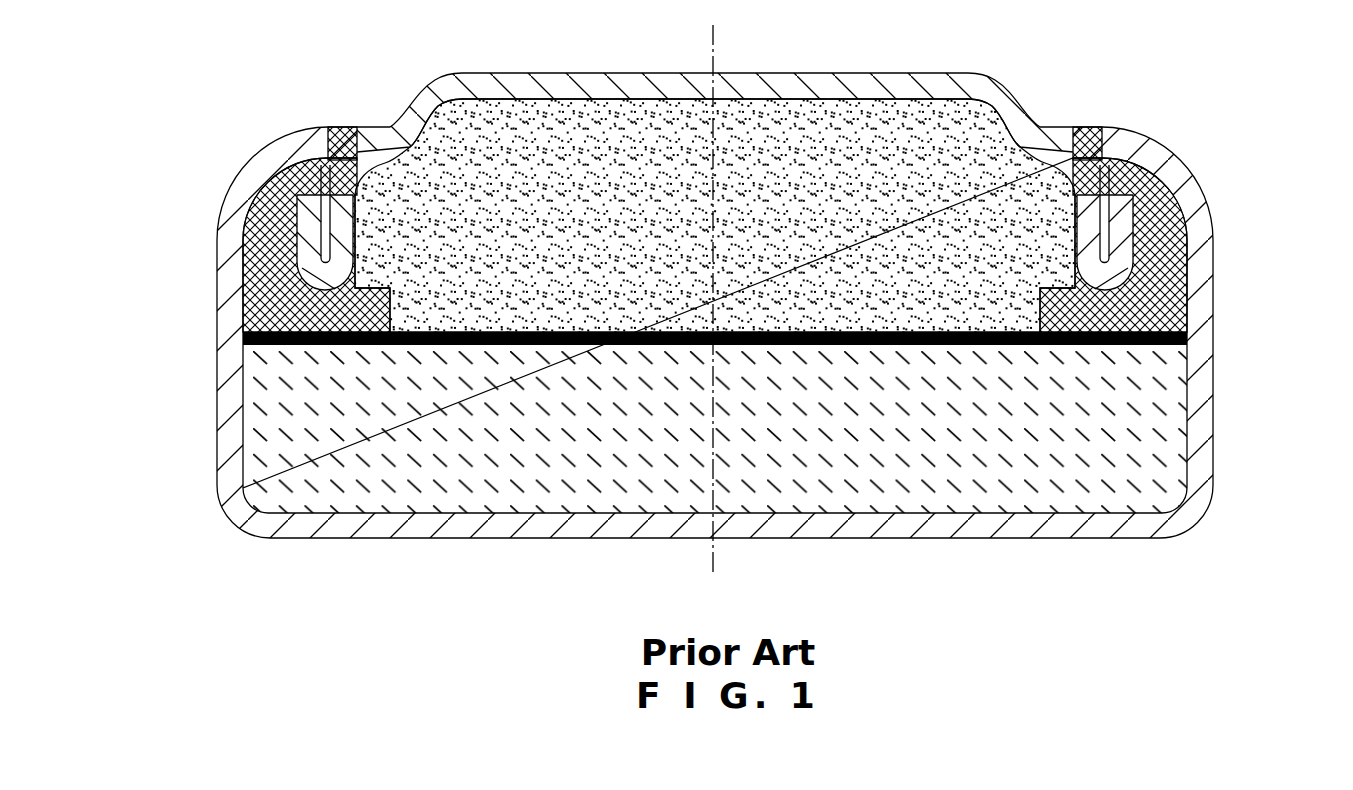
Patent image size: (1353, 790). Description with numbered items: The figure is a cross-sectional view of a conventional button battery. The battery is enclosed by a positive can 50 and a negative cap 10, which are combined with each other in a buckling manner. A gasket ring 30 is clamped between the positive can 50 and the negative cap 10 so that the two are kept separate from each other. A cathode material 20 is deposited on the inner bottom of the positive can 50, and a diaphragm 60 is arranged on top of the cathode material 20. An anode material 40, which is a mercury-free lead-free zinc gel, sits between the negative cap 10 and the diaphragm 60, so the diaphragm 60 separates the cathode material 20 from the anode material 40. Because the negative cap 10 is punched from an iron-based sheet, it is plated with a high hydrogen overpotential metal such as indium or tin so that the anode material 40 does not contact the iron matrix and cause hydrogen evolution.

The negative cap 10 is at (323, 158).
The cathode material 20 is at (1163, 392).
The gasket ring 30 is at (1188, 300).
The anode material 40 is at (412, 216).
The positive can 50 is at (1197, 442).
The diaphragm 60 is at (1188, 337).